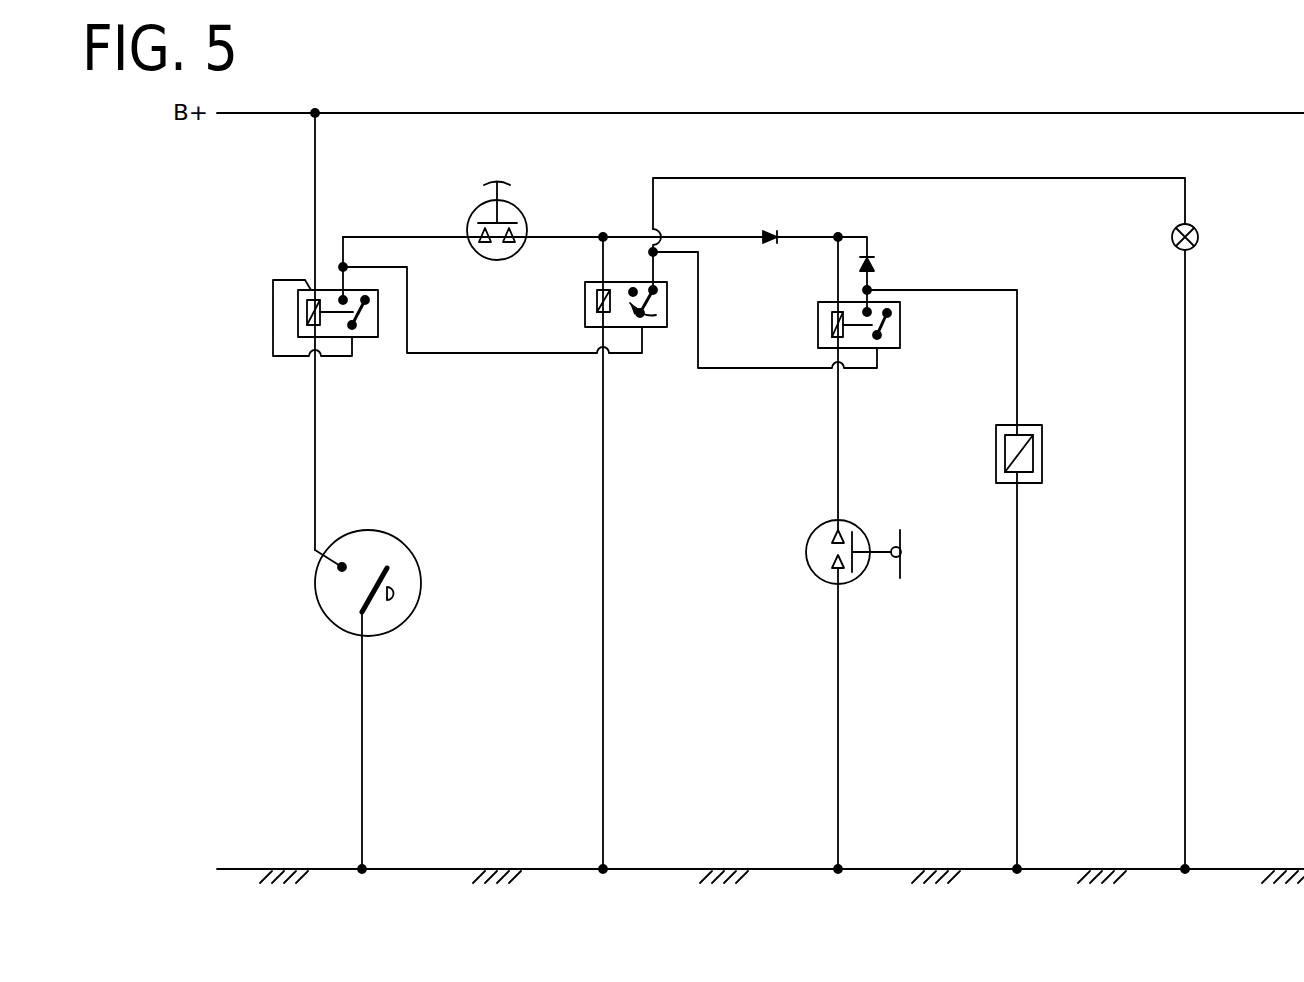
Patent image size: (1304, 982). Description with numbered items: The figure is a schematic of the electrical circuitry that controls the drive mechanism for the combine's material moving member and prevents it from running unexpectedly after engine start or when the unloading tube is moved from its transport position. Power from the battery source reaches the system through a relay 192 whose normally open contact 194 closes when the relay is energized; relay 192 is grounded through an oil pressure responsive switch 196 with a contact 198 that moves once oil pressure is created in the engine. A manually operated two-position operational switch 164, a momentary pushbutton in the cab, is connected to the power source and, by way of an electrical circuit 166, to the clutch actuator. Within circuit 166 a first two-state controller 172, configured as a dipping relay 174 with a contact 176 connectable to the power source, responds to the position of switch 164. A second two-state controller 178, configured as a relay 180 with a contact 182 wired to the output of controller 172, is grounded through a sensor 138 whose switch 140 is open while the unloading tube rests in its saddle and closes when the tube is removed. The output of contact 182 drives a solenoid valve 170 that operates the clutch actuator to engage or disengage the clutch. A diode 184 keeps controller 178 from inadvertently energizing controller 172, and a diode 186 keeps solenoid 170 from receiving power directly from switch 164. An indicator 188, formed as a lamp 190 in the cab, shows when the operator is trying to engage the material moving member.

The sensor 138 is at (805, 563).
The switch 140 is at (820, 540).
The operational switch 164 is at (524, 202).
The electrical circuit 166 is at (578, 230).
The solenoid valve 170 is at (1044, 470).
The two-state controller 172 is at (583, 320).
The dipping relay 174 is at (590, 288).
The contact 176 is at (650, 314).
The second two-state controller 178 is at (816, 335).
The relay 180 is at (822, 312).
The contact 182 is at (880, 335).
The diode 184 is at (772, 229).
The diode 186 is at (880, 262).
The indicator 188 is at (1197, 222).
The lamp 190 is at (1198, 244).
The relay 192 is at (328, 288).
The normally open contact 194 is at (360, 306).
The oil pressure responsive switch 196 is at (340, 633).
The contact 198 is at (373, 582).